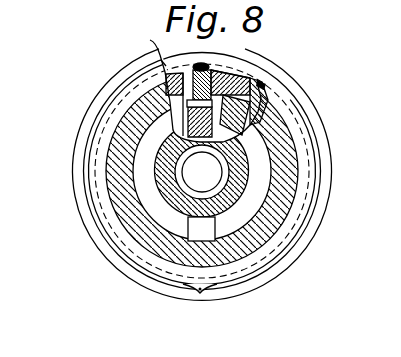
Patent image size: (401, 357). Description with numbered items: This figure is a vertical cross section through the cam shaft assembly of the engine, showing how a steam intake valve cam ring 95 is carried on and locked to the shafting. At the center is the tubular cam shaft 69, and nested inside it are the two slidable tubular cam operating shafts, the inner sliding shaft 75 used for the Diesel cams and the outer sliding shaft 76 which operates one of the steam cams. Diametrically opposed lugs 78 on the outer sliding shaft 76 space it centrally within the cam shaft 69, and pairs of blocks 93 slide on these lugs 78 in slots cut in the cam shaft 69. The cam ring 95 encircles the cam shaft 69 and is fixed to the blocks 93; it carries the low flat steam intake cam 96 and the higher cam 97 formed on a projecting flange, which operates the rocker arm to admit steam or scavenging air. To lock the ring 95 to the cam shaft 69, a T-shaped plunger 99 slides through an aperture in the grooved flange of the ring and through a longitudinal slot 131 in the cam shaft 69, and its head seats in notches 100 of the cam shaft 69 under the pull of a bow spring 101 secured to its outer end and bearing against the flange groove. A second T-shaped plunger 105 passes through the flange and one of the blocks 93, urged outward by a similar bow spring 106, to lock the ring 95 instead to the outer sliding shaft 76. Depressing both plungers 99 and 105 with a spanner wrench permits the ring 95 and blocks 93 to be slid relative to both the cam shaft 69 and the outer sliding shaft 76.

The tubular cam shaft 69 is at (152, 238).
The inner sliding cam operating shaft 75 is at (186, 176).
The outer sliding cam operating shaft 76 is at (180, 210).
The lugs 78 is at (172, 134).
The blocks 93 is at (162, 62).
The steam intake valve cam ring 95 is at (80, 191).
The steam intake cam 96 is at (100, 116).
The cam 97 is at (200, 291).
The T-shaped plunger 99 is at (262, 94).
The notches 100 is at (250, 116).
The bow spring 101 is at (260, 83).
The T-shaped plunger 105 is at (150, 40).
The bow spring 106 is at (205, 64).
The longitudinal slot 131 is at (258, 105).